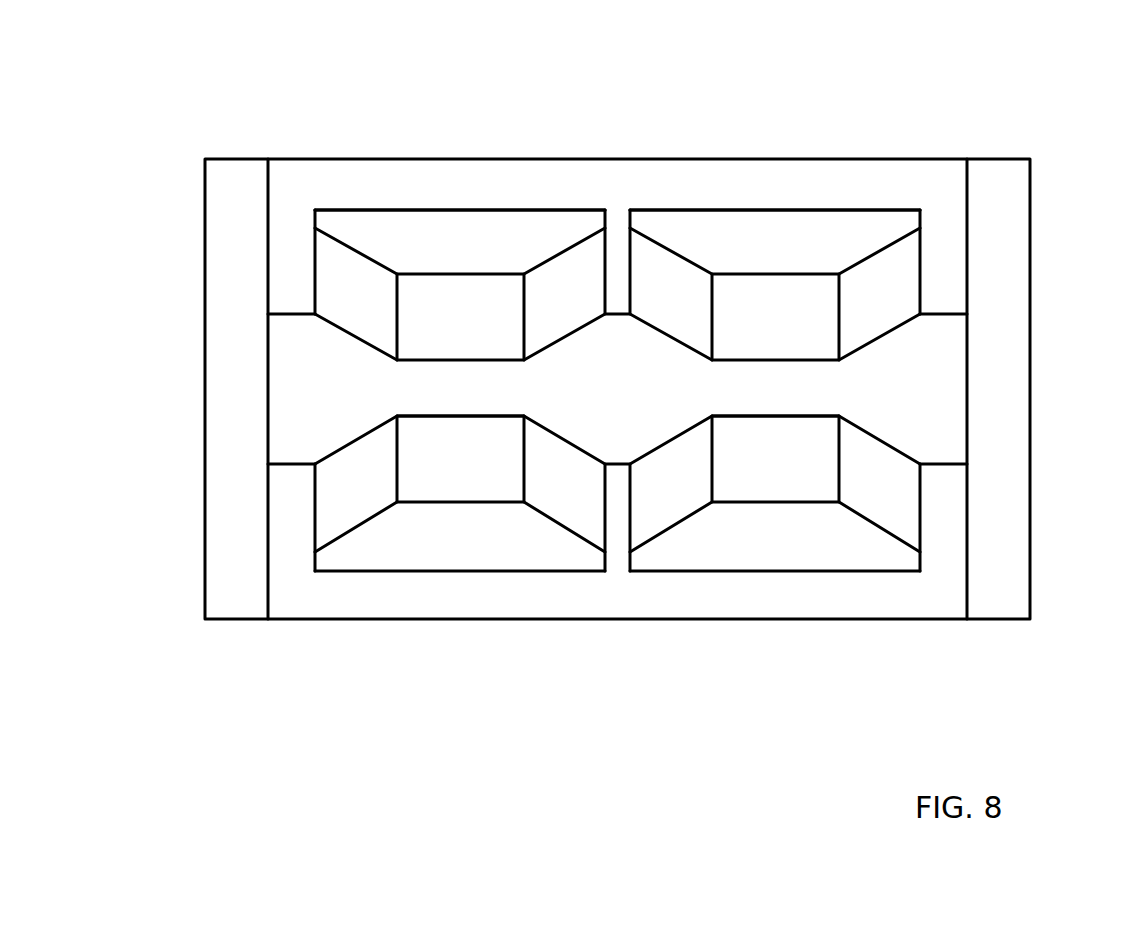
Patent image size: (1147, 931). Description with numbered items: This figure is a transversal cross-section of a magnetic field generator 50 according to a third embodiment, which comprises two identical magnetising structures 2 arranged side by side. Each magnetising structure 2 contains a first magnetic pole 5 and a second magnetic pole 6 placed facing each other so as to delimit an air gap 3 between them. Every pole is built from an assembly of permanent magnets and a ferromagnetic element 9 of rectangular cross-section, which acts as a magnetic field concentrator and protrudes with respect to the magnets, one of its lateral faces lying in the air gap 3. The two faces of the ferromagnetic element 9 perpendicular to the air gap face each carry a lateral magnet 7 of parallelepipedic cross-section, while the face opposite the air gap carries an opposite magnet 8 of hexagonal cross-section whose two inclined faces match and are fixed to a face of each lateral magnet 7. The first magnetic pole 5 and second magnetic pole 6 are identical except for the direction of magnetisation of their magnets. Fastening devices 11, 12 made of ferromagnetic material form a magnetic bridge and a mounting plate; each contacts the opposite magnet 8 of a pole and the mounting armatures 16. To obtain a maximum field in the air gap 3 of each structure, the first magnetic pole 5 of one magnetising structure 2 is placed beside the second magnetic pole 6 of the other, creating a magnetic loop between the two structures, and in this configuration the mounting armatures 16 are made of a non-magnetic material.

The magnetic field generator 50 is at (1072, 133).
The magnetising structure 2 is at (460, 130).
The air gap 3 is at (463, 398).
The first magnetic pole 5 is at (297, 250).
The second magnetic pole 6 is at (618, 245).
The lateral magnet 7 is at (347, 282).
The opposite magnet 8 is at (518, 242).
The ferromagnetic element 9 is at (460, 302).
The fastening device 11 is at (522, 175).
The fastening device 12 is at (497, 607).
The mounting armature 16 is at (1020, 303).